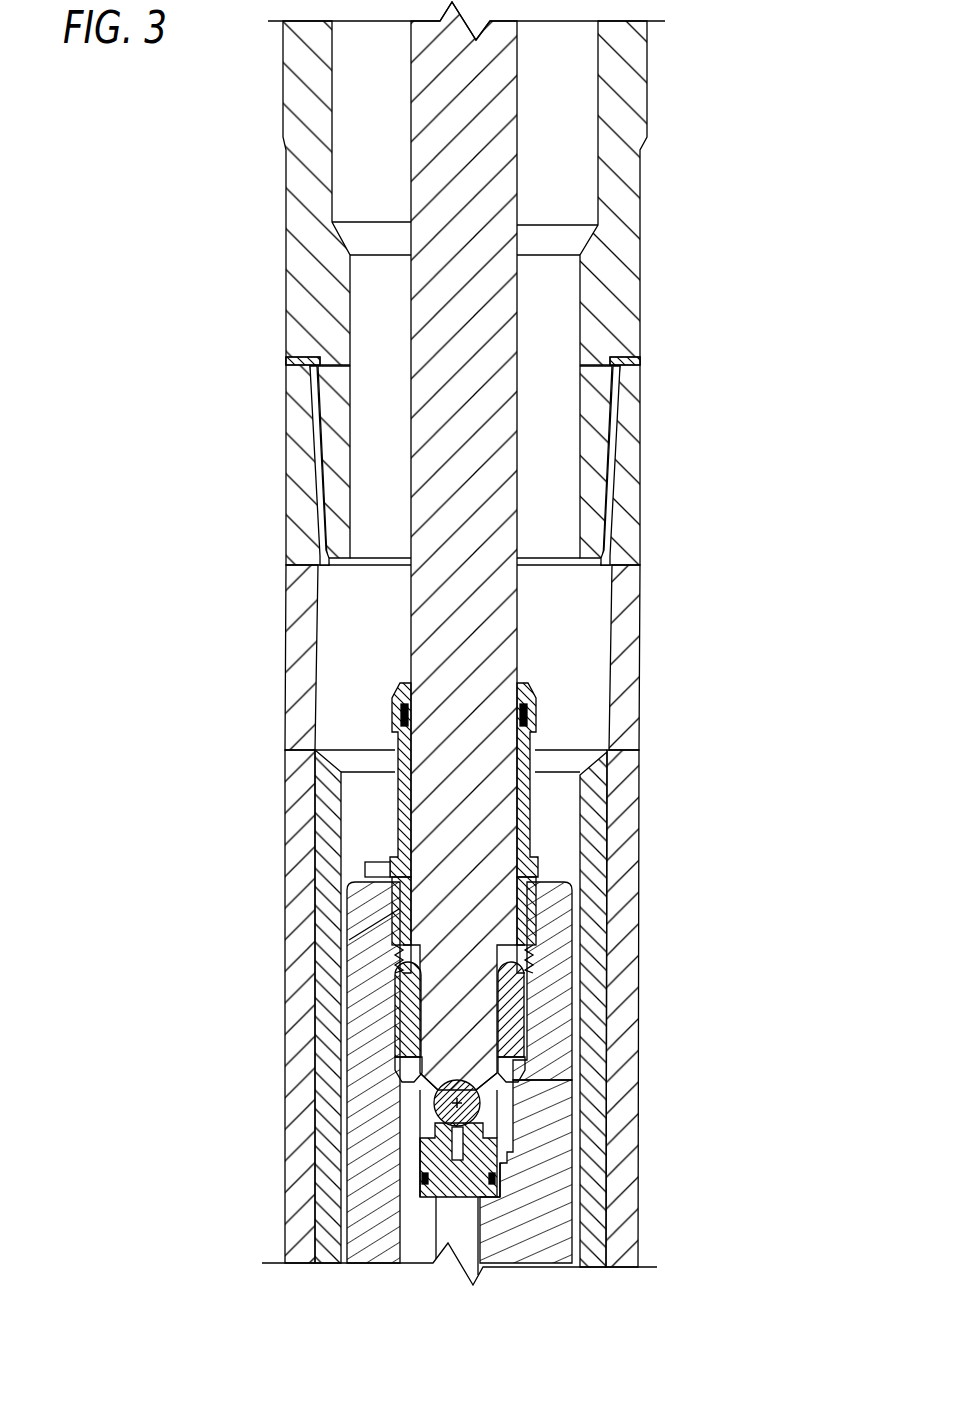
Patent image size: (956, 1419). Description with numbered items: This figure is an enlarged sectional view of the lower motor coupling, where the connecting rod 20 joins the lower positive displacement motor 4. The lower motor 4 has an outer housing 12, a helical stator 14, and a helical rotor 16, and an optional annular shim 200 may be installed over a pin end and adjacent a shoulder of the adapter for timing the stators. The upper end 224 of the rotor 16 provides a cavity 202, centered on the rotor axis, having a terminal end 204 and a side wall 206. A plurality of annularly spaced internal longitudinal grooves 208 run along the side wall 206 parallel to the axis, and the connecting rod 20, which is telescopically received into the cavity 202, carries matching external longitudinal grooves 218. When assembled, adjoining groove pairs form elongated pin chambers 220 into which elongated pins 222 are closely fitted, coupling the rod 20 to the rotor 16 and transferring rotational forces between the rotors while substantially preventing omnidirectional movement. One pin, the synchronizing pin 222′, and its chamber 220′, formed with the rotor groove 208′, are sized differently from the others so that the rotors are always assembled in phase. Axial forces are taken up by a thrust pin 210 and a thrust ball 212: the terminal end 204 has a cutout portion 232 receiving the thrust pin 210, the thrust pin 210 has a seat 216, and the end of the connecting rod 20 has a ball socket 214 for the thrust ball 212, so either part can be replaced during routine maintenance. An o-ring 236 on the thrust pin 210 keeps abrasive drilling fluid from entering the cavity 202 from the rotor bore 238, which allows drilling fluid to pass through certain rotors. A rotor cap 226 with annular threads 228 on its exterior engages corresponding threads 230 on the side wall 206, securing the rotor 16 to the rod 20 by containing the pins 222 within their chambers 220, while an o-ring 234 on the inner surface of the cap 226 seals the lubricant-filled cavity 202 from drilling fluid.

The lower positive displacement motor 4 is at (790, 86).
The outer housing 12 is at (644, 1245).
The helical stator 14 is at (589, 1269).
The helical rotor 16 is at (525, 1269).
The connecting rod 20 is at (524, 302).
The annular shim 200 is at (637, 365).
The cavity 202 is at (505, 1135).
The terminal end 204 is at (515, 1178).
The side wall 206 is at (578, 933).
The internal longitudinal grooves 208 is at (540, 1088).
The rotor groove 208′ is at (415, 1085).
The thrust pin 210 is at (412, 1158).
The thrust ball 212 is at (415, 1120).
The ball socket 214 is at (440, 1096).
The seat 216 is at (478, 1106).
The external longitudinal grooves 218 is at (400, 950).
The elongated pin chambers 220 is at (515, 1068).
The synchronizing pin chamber 220′ is at (404, 1065).
The elongated pins 222 is at (525, 1015).
The synchronizing pin 222′ is at (398, 1017).
The upper end 224 is at (365, 862).
The rotor cap 226 is at (530, 824).
The annular threads 228 is at (385, 897).
The threads 230 is at (385, 927).
The cutout portion 232 is at (427, 1194).
The o-ring 234 is at (525, 712).
The o-ring 236 is at (420, 1183).
The rotor bore 238 is at (463, 1268).